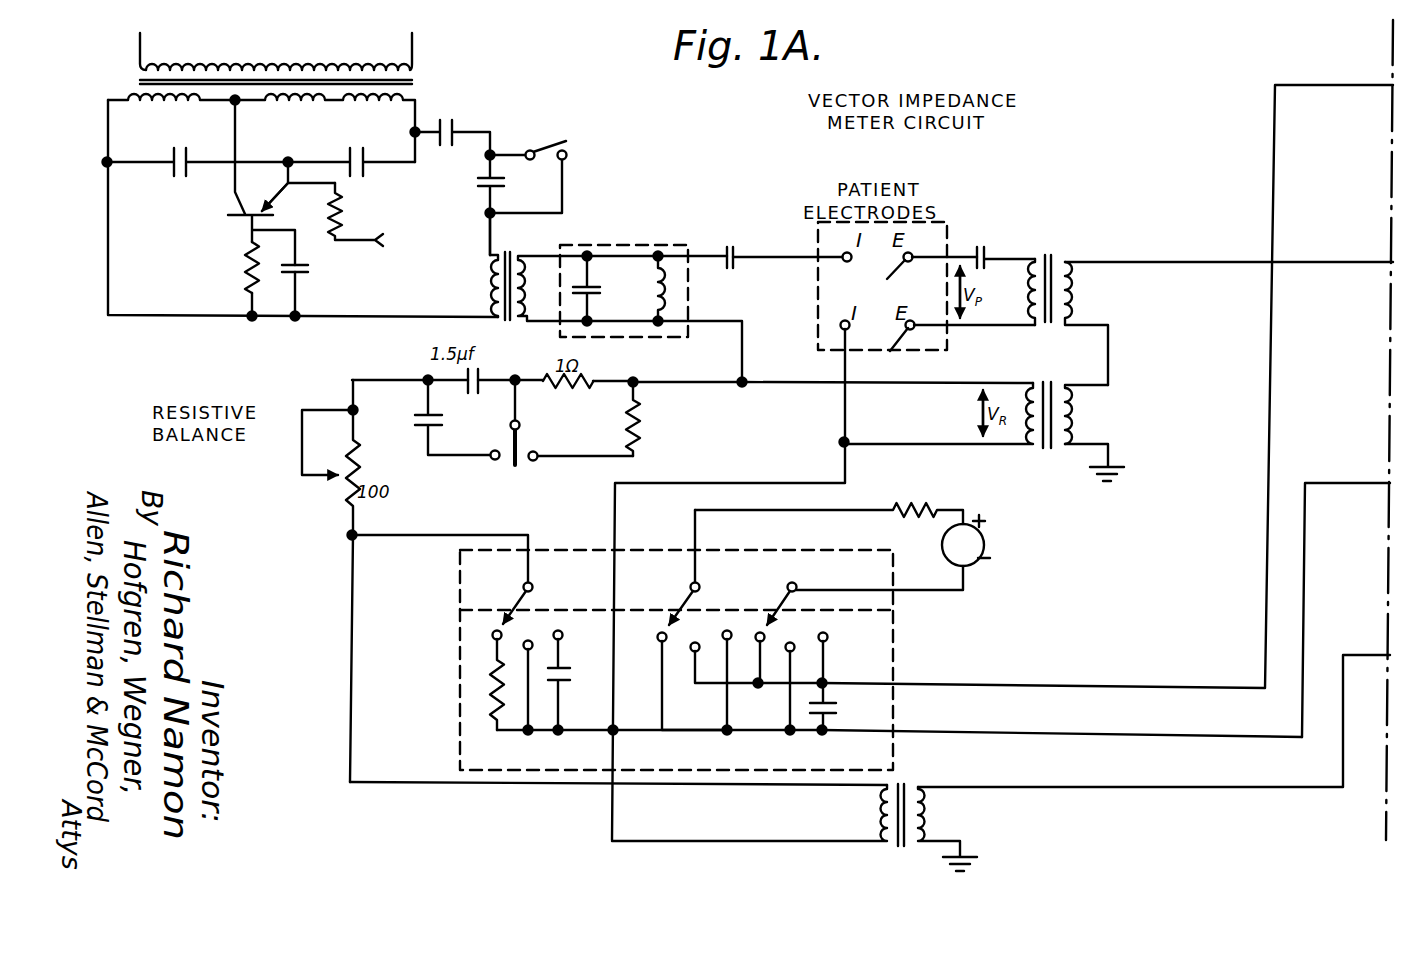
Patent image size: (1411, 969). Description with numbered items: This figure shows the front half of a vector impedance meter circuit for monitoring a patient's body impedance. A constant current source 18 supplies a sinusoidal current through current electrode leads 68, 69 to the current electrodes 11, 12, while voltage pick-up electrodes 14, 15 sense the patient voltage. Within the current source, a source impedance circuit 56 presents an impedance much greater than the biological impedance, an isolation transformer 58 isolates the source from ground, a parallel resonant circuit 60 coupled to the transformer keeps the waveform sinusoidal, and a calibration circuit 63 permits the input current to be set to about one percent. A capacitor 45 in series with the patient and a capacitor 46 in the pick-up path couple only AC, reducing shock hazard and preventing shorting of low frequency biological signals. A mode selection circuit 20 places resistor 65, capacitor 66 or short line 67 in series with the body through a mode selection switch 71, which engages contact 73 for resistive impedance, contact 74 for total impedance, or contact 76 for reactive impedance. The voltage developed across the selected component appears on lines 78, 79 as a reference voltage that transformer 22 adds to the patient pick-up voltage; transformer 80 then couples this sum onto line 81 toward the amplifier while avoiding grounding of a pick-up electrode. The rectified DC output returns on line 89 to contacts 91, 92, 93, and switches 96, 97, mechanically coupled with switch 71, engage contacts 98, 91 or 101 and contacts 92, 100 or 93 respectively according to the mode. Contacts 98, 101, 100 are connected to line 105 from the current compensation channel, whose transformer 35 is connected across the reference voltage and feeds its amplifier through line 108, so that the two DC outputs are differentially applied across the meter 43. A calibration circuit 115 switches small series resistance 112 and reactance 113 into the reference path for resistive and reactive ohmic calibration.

The current electrode 11 is at (842, 255).
The current electrode 12 is at (840, 325).
The voltage pick-up electrode 14 is at (893, 280).
The voltage pick-up electrode 15 is at (899, 344).
The constant current source 18 is at (352, 333).
The mode selection circuit 20 is at (826, 677).
The transformer 22 is at (1048, 466).
The transformer 35 is at (896, 851).
The meter 43 is at (984, 563).
The capacitor 45 is at (729, 246).
The capacitor 46 is at (998, 251).
The source impedance circuit 56 is at (410, 274).
The isolation transformer 58 is at (511, 330).
The parallel resonant circuit 60 is at (637, 340).
The calibration circuit 63 is at (557, 136).
The resistor 65 is at (492, 688).
The capacitor 66 is at (572, 674).
The short line 67 is at (494, 724).
The current electrode lead 68 is at (759, 254).
The current electrode lead 69 is at (753, 486).
The mode selection switch 71 is at (517, 592).
The contact 73 is at (492, 638).
The contact 74 is at (538, 628).
The contact 76 is at (562, 631).
The line 78 is at (1093, 392).
The line 79 is at (1092, 445).
The transformer 80 is at (1073, 253).
The line 81 is at (1221, 262).
The line 89 is at (1097, 664).
The contact 91 is at (692, 655).
The contact 92 is at (754, 622).
The contact 93 is at (829, 636).
The switch 96 is at (682, 602).
The switch 97 is at (772, 626).
The contact 98 is at (658, 639).
The contact 100 is at (797, 642).
The contact 101 is at (724, 630).
The line 105 is at (1060, 740).
The line 108 is at (1297, 793).
The series resistance 112 is at (640, 435).
The series reactance 113 is at (415, 419).
The calibration circuit 115 is at (523, 478).